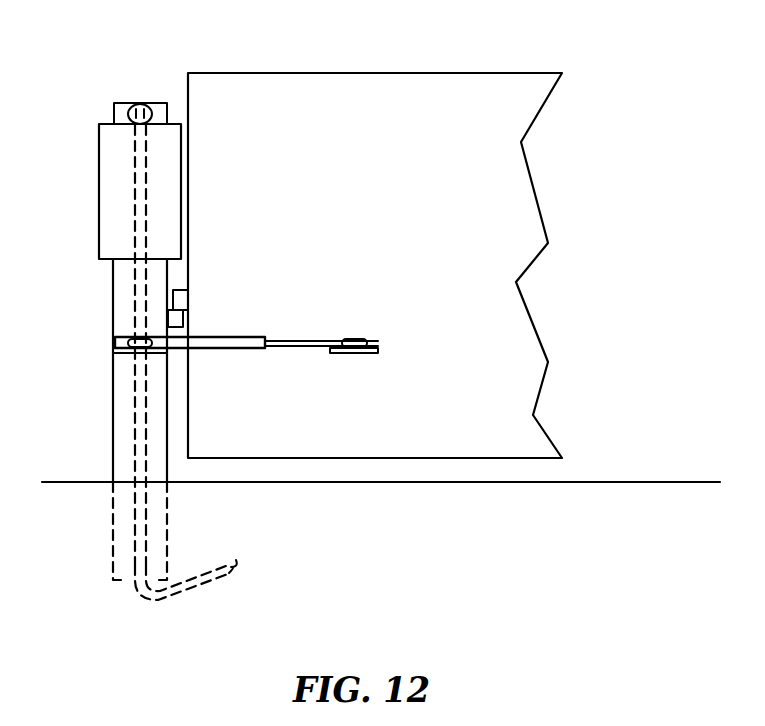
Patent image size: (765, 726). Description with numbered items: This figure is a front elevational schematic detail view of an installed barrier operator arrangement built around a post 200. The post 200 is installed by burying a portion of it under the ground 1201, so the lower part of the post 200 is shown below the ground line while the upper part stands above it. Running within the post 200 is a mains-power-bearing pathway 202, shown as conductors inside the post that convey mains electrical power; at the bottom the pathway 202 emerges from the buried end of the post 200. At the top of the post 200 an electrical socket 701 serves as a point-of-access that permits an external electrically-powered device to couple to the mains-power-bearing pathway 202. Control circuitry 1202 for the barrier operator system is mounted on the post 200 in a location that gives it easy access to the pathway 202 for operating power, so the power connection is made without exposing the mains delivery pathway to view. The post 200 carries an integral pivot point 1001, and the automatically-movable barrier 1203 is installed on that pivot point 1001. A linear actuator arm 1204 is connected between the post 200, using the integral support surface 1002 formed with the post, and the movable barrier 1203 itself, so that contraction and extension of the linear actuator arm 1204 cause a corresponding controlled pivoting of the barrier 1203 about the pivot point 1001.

The automatically-movable barrier 1203 is at (415, 73).
The ground 1201 is at (301, 483).
The control circuitry 1202 is at (99, 152).
The electrical socket 701 is at (128, 112).
The post 200 is at (112, 275).
The pivot point 1001 is at (175, 318).
The linear actuator arm 1204 is at (217, 349).
The support surface 1002 is at (130, 358).
The mains-power-bearing pathway 202 is at (183, 598).